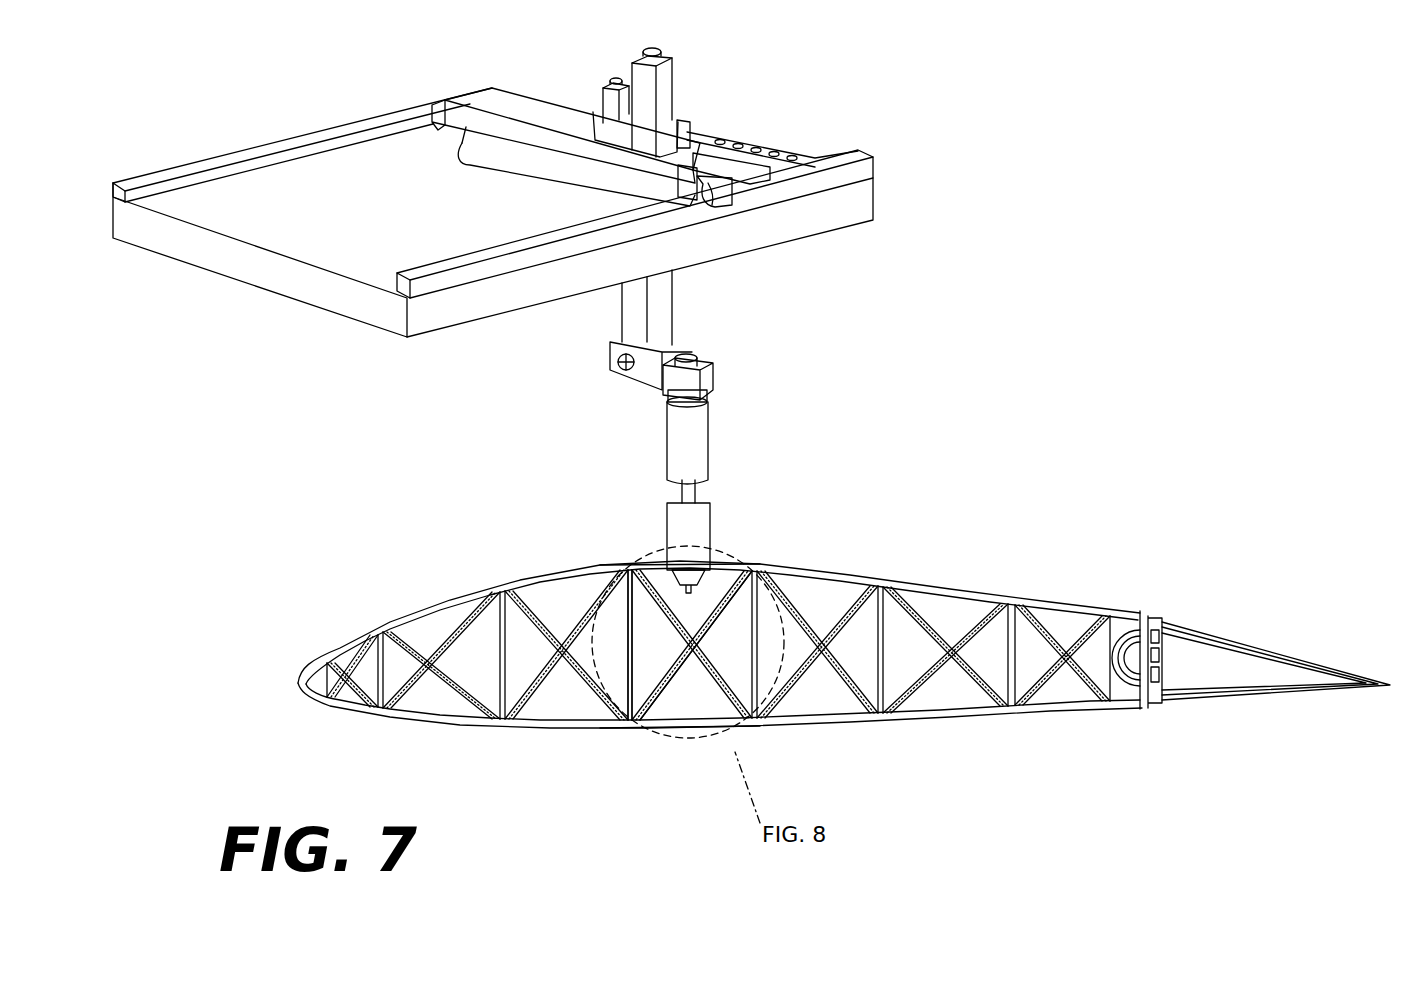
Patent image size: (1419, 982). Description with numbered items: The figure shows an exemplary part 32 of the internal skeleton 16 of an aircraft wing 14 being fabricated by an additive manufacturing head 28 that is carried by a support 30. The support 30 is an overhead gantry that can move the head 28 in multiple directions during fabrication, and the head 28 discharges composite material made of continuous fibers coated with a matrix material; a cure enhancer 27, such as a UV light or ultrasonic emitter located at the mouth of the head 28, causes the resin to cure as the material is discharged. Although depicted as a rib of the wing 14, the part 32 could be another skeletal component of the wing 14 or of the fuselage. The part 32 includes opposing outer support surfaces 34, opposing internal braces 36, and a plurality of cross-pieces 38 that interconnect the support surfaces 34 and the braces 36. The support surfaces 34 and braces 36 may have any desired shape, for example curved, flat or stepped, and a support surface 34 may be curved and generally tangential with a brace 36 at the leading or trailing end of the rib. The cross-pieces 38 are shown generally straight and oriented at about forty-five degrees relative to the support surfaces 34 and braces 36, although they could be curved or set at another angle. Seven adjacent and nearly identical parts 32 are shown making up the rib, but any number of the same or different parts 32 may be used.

The wing 14 is at (286, 550).
The internal skeleton 16 is at (1005, 692).
The cure enhancer 27 is at (712, 577).
The head 28 is at (700, 533).
The support 30 is at (258, 272).
The part 32 is at (618, 752).
The outer support surface 34 is at (643, 560).
The internal brace 36 is at (612, 670).
The cross-piece 38 is at (713, 688).